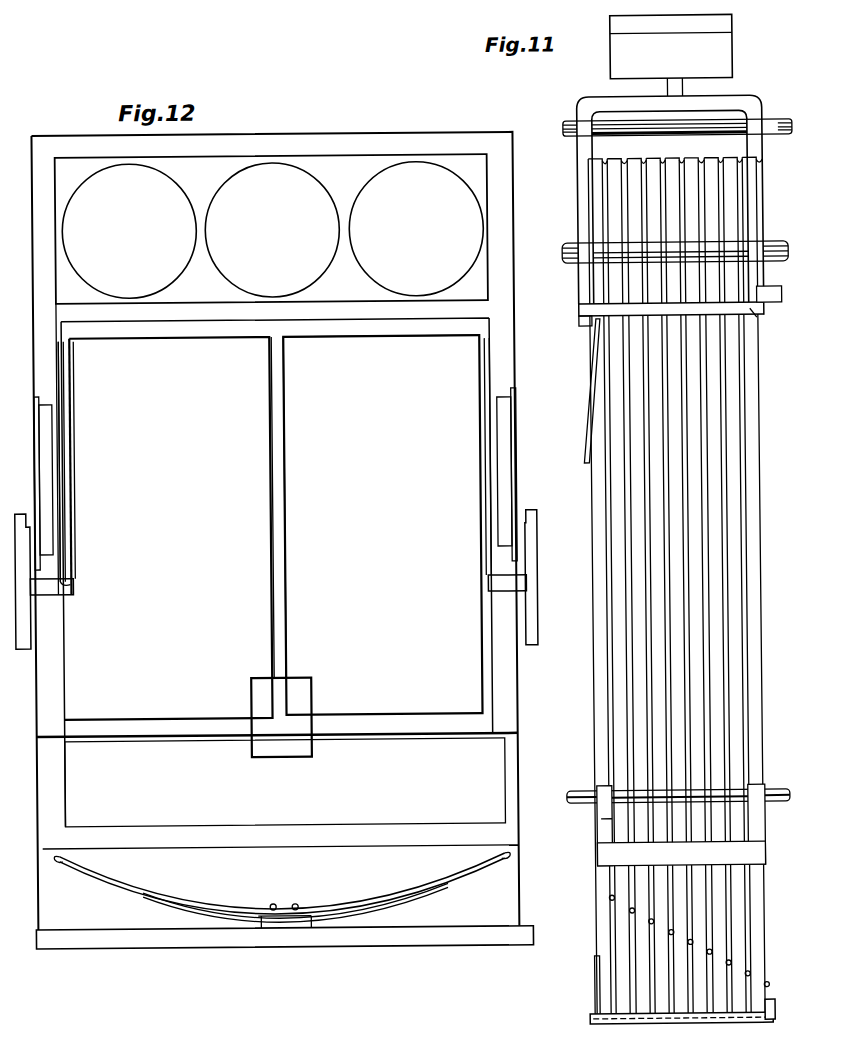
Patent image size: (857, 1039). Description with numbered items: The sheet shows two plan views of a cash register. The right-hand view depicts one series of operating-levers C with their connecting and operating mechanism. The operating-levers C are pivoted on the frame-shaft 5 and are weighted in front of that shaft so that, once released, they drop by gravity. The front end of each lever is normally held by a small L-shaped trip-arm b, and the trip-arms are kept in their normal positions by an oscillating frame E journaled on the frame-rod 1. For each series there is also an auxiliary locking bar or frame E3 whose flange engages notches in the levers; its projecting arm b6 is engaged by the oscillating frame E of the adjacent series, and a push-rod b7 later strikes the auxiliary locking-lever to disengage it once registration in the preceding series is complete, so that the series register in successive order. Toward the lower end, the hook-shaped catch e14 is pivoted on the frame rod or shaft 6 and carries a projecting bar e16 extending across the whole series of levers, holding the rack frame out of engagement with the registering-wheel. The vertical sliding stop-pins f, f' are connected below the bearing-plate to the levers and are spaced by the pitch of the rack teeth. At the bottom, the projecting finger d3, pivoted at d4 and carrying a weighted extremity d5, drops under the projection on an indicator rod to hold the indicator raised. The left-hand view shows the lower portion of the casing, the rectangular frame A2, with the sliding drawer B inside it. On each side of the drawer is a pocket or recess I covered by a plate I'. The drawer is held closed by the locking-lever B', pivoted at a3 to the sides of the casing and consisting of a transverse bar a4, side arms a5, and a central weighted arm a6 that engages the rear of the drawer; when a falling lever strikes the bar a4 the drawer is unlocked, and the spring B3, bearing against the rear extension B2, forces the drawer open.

In FIG. 12, the sliding drawer B is at (382, 525).
In FIG. 12, the locking-lever B' is at (166, 528).
In FIG. 12, the rear extension B2 is at (285, 782).
In FIG. 12, the spring B3 is at (332, 907).
In FIG. 12, the pivots a3 is at (78, 592).
In FIG. 12, the transverse bar a4 is at (331, 332).
In FIG. 12, the side arms a5 is at (70, 472).
In FIG. 12, the central weighted arm a6 is at (283, 577).
In FIG. 12, the rectangular frame A2 is at (552, 567).
In FIG. 12, the pocket or recess I is at (270, 476).
In FIG. 12, the plate I' is at (272, 479).
In FIG. 11, the oscillating frame E is at (735, 100).
In FIG. 11, the frame-rod 1 is at (773, 130).
In FIG. 11, the trip-arm b is at (592, 207).
In FIG. 11, the projecting arm b6 is at (760, 319).
In FIG. 11, the push-rod b7 is at (750, 162).
In FIG. 11, the frame-shaft 5 is at (779, 246).
In FIG. 11, the auxiliary locking bar or frame E3 is at (581, 294).
In FIG. 11, the operating-levers C is at (674, 543).
In FIG. 11, the frame rod or shaft 6 is at (776, 791).
In FIG. 11, the projecting bar e16 is at (783, 850).
In FIG. 11, the hook-shaped catch e14 is at (598, 818).
In FIG. 11, the stop-pin f is at (656, 936).
In FIG. 11, the stop-pin f' is at (779, 961).
In FIG. 11, the weighted extremity d5 is at (590, 985).
In FIG. 11, the pivot d4 is at (771, 1010).
In FIG. 11, the projecting finger d3 is at (745, 1022).